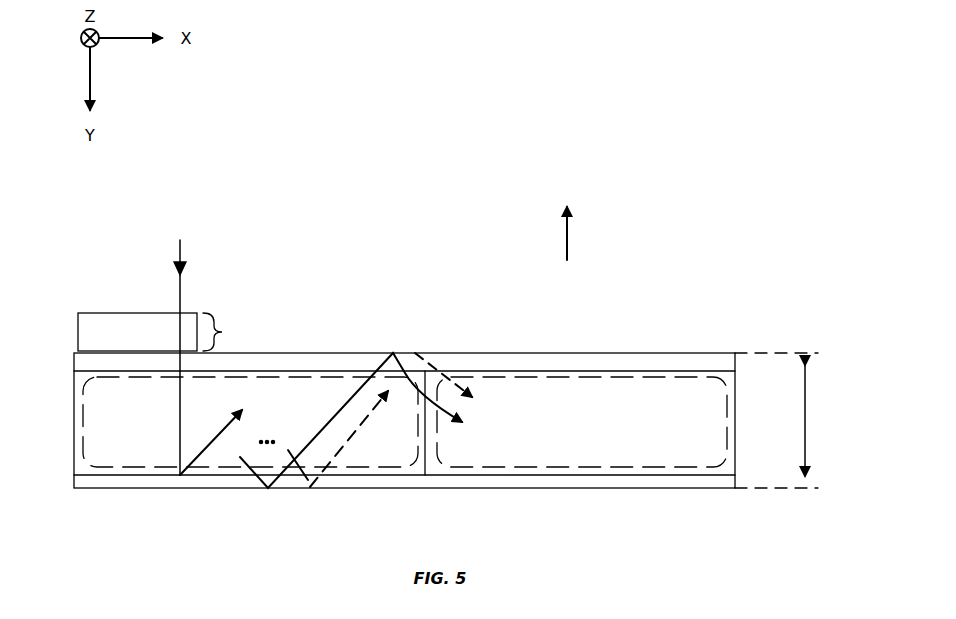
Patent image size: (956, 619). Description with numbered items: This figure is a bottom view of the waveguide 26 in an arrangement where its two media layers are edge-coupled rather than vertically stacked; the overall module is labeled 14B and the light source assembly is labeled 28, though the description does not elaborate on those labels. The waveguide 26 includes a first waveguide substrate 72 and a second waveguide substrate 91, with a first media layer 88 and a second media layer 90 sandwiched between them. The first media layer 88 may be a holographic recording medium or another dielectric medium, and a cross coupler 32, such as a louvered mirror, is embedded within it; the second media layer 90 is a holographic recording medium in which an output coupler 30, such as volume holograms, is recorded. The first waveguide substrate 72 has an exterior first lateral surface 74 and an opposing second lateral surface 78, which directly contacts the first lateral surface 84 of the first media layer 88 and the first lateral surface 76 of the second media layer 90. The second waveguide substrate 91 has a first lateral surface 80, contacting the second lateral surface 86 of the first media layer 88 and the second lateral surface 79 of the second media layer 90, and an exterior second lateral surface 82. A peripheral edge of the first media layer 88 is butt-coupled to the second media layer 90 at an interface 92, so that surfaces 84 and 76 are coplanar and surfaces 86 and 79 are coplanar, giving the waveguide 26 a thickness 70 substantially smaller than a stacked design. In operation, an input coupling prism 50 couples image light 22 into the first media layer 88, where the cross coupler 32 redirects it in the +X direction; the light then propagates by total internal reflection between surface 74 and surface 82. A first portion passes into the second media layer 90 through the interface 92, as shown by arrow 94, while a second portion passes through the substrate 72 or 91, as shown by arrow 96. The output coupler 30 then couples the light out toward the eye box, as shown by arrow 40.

The light guide module 14B is at (538, 90).
The image light 22 is at (180, 280).
The waveguide 26 is at (698, 275).
The light source assembly 28 is at (226, 332).
The output coupler 30 is at (688, 357).
The cross coupler 32 is at (283, 377).
The arrow 40 is at (567, 232).
The input coupling prism 50 is at (118, 313).
The thickness 70 is at (805, 422).
The first waveguide substrate 72 is at (633, 357).
The first lateral surface 74 is at (551, 347).
The first lateral surface 76 is at (566, 376).
The second lateral surface 78 is at (501, 366).
The second lateral surface 79 is at (588, 470).
The first lateral surface 80 is at (483, 479).
The second lateral surface 82 is at (668, 493).
The first lateral surface 84 is at (137, 378).
The second lateral surface 86 is at (123, 471).
The first media layer 88 is at (105, 439).
The second media layer 90 is at (722, 425).
The second waveguide substrate 91 is at (603, 487).
The interface 92 is at (417, 475).
The arrow 94 is at (302, 450).
The arrow 96 is at (393, 390).